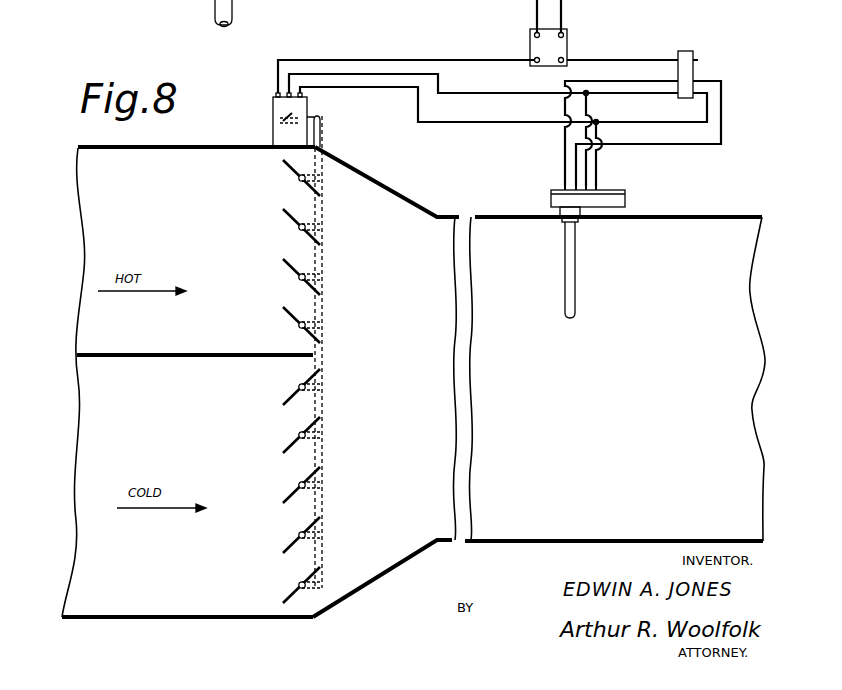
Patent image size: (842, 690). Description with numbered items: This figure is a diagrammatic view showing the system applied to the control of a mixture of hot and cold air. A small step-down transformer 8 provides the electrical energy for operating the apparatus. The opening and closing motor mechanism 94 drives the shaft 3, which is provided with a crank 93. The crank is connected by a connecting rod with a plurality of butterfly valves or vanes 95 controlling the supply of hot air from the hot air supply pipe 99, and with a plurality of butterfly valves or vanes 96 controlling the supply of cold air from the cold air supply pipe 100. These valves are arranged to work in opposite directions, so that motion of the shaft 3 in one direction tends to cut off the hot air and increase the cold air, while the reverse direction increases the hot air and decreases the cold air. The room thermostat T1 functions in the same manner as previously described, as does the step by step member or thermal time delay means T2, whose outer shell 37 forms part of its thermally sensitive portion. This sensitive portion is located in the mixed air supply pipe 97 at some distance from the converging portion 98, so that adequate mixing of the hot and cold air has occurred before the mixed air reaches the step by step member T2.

The shaft 3 is at (280, 122).
The step-down transformer 8 is at (569, 43).
The outer shell 37 is at (578, 288).
The crank 93 is at (316, 114).
The opening and closing motor mechanism 94 is at (273, 103).
The butterfly valves or vanes (hot air) 95 is at (287, 220).
The butterfly valves or vanes (cold air) 96 is at (298, 437).
The mixed air supply pipe 97 is at (714, 214).
The converging portion 98 is at (384, 186).
The hot air supply pipe 99 is at (97, 145).
The cold air supply pipe 100 is at (138, 621).
The room thermostat T1 is at (706, 69).
The step by step member or thermal time delay means T2 is at (632, 200).